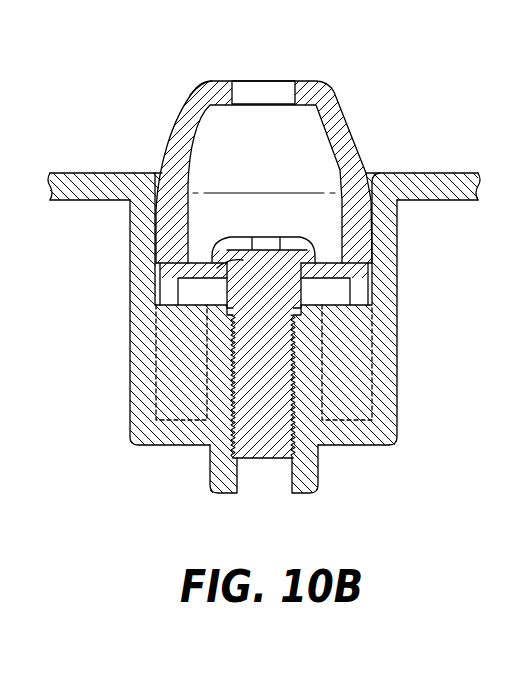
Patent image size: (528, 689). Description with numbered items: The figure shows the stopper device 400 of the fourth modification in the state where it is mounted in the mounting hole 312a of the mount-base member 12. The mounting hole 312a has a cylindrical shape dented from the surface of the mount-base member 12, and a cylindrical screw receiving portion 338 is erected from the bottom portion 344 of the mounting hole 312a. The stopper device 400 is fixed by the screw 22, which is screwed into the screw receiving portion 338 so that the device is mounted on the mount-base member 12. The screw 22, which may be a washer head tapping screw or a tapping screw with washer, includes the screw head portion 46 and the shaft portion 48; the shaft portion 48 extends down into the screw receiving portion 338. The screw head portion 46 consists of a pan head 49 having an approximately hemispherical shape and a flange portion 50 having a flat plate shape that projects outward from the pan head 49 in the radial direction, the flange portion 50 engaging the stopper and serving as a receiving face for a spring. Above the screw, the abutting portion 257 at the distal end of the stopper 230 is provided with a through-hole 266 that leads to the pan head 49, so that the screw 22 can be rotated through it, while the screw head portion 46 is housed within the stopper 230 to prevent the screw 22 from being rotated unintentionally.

The stopper device 400 is at (240, 134).
The abutting portion 257 is at (203, 82).
The through-hole 266 is at (274, 90).
The stopper 230 is at (336, 107).
The mounting hole 312a is at (377, 191).
The mount-base member 12 is at (439, 190).
The pan head 49 is at (244, 241).
The screw head portion 46 is at (157, 267).
The flange portion 50 is at (345, 269).
The screw receiving portion 338 is at (309, 367).
The bottom portion 344 is at (364, 444).
The shaft portion 48 is at (267, 424).
The screw 22 is at (258, 384).